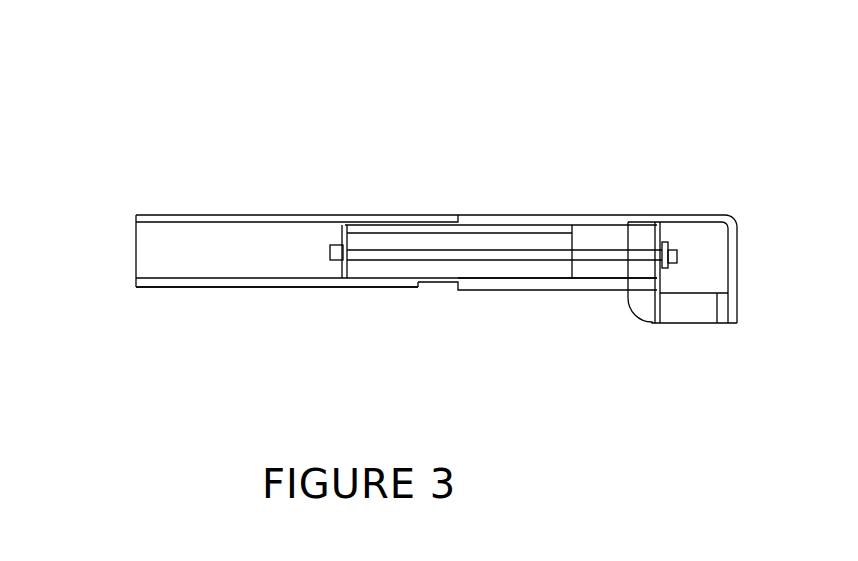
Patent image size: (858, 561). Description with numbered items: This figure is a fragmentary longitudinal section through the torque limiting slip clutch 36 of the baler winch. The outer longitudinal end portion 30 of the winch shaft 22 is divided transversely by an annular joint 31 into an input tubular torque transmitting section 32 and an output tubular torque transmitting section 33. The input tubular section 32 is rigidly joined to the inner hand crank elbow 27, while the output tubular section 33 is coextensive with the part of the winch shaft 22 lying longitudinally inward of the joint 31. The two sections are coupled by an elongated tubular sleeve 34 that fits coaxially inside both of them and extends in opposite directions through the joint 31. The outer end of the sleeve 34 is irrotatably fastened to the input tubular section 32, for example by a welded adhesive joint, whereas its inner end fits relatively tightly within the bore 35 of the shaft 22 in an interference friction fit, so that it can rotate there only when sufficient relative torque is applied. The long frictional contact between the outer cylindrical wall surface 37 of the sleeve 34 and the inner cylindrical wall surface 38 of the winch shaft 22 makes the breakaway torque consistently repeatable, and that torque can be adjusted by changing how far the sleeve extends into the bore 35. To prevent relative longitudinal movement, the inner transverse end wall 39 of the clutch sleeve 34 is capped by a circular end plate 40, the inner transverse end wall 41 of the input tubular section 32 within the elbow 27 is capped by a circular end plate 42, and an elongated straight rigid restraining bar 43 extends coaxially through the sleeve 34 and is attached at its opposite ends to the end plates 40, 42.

The winch shaft 22 is at (163, 172).
The inner hand crank elbow 27 is at (737, 235).
The outer longitudinal end portion 30 is at (340, 258).
The annular joint 31 is at (458, 215).
The input tubular torque transmitting section 32 is at (525, 215).
The output tubular torque transmitting section 33 is at (450, 290).
The tubular sleeve 34 is at (502, 286).
The bore 35 is at (396, 258).
The slip clutch 36 is at (482, 152).
The outer cylindrical wall surface 37 is at (420, 278).
The inner cylindrical wall surface 38 is at (175, 225).
The inner transverse end wall 39 is at (333, 245).
The circular end plate 40 is at (340, 264).
The inner transverse end wall 41 is at (652, 292).
The circular end plate 42 is at (665, 280).
The restraining bar 43 is at (606, 248).